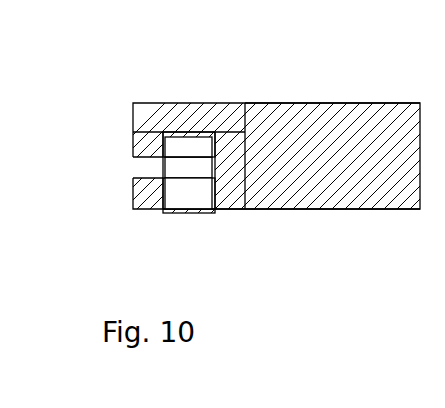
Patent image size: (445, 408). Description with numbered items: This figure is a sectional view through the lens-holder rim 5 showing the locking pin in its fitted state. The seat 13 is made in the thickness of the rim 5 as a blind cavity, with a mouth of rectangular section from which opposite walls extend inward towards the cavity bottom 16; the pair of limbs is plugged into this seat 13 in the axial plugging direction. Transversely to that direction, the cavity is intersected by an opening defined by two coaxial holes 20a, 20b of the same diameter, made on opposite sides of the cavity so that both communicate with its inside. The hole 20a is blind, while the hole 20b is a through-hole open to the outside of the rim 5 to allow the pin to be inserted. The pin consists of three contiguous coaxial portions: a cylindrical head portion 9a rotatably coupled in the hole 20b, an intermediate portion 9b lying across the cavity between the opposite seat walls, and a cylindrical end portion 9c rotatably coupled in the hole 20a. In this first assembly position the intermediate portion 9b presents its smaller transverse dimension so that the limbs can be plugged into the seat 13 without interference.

The rim 5 is at (332, 210).
The first, cylindrical portion 9a is at (212, 213).
The second, intermediate portion 9b is at (308, 108).
The third, end portion 9c is at (249, 104).
The seat 13 is at (139, 170).
The cavity bottom 16 is at (228, 212).
The hole 20a is at (185, 132).
The hole 20b is at (175, 213).